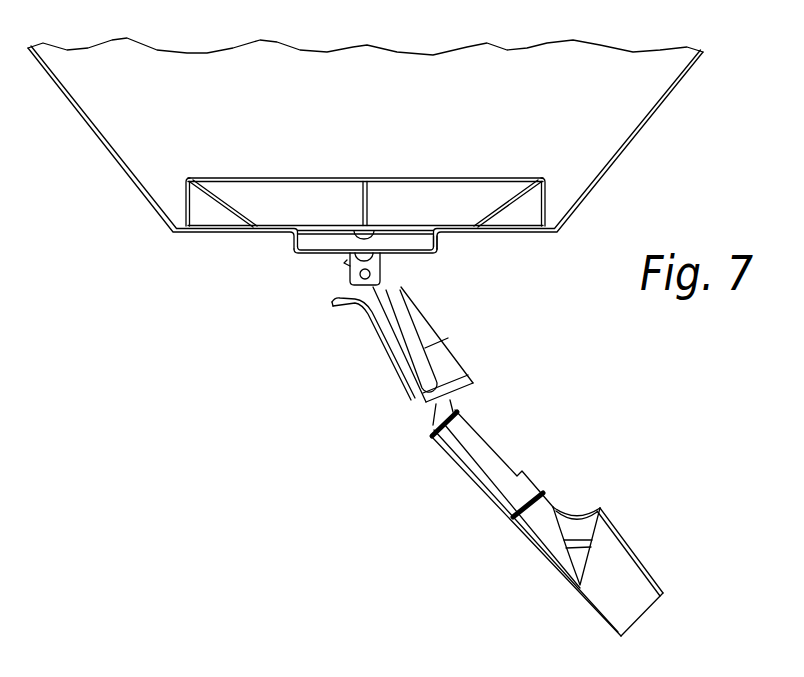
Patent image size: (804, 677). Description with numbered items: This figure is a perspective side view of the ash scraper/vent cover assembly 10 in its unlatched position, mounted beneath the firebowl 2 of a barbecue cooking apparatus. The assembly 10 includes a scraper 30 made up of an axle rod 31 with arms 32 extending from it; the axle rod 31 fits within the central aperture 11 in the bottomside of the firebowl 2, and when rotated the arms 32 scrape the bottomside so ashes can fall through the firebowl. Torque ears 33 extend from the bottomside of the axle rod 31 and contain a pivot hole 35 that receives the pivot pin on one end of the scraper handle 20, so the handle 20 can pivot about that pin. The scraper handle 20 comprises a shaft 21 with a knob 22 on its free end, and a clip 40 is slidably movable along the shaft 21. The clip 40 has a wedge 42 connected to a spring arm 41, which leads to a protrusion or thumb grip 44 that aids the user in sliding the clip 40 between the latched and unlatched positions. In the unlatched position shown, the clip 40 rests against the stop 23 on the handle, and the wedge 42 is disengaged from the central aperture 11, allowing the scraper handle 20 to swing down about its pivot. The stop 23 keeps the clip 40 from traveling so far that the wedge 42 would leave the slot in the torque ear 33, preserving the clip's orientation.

The firebowl 2 is at (585, 165).
The ash scraper/vent cover assembly 10 is at (512, 406).
The central aperture 11 is at (432, 253).
The scraper handle 20 is at (632, 543).
The shaft 21 is at (437, 423).
The knob 22 is at (630, 612).
The stop 23 is at (433, 432).
The scraper 30 is at (403, 182).
The axle rod 31 is at (310, 248).
The arm 32 is at (232, 190).
The torque ears 33 is at (347, 265).
The pivot hole 35 is at (383, 273).
The clip 40 is at (461, 368).
The spring arm 41 is at (413, 393).
The wedge 42 is at (420, 333).
The thumb grip 44 is at (337, 312).